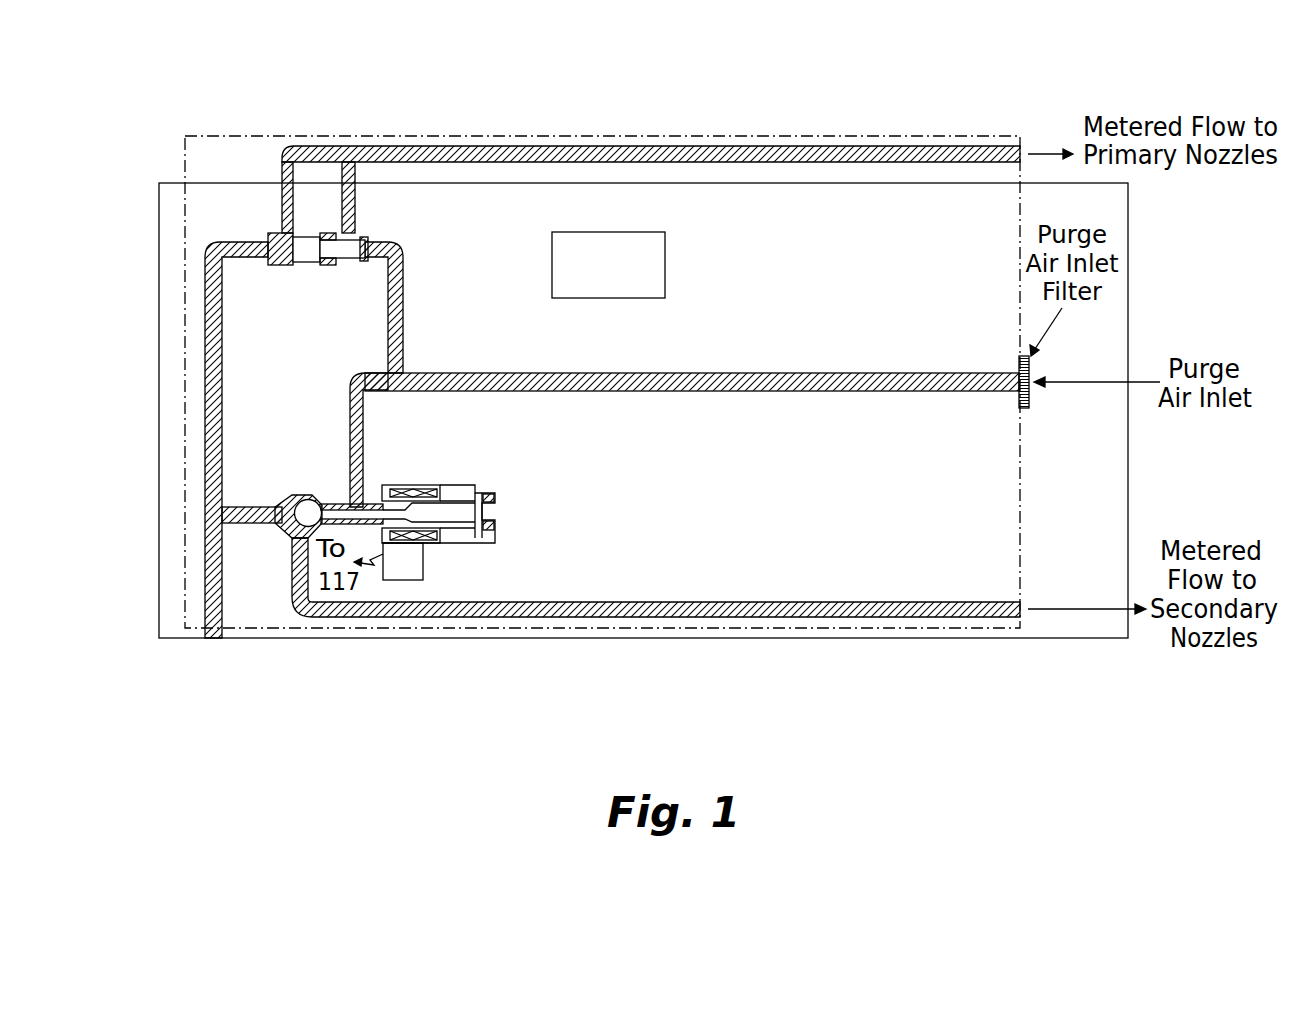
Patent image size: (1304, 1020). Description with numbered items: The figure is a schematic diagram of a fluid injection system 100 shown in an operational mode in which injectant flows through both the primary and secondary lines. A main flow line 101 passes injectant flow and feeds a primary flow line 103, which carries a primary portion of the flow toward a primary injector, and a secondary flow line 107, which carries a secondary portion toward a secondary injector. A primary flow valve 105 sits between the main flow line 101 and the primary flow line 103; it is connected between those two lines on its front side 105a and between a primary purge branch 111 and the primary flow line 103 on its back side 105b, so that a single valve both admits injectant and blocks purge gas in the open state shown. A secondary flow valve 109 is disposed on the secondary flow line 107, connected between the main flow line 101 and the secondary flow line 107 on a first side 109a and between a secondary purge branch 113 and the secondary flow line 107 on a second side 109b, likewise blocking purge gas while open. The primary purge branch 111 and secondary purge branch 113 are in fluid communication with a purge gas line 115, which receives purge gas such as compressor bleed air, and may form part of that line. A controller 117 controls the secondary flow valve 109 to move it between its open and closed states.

The fluid injection system 100 is at (263, 56).
The main flow line 101 is at (219, 386).
The primary flow line 103 is at (457, 144).
The primary flow valve 105 is at (327, 256).
The front side 105a is at (284, 240).
The back side 105b is at (370, 240).
The secondary flow line 107 is at (652, 600).
The secondary flow valve 109 is at (394, 512).
The first side 109a is at (290, 494).
The second side 109b is at (318, 497).
The primary purge branch 111 is at (405, 302).
The secondary purge branch 113 is at (366, 442).
The purge gas line 115 is at (778, 372).
The controller 117 is at (628, 279).